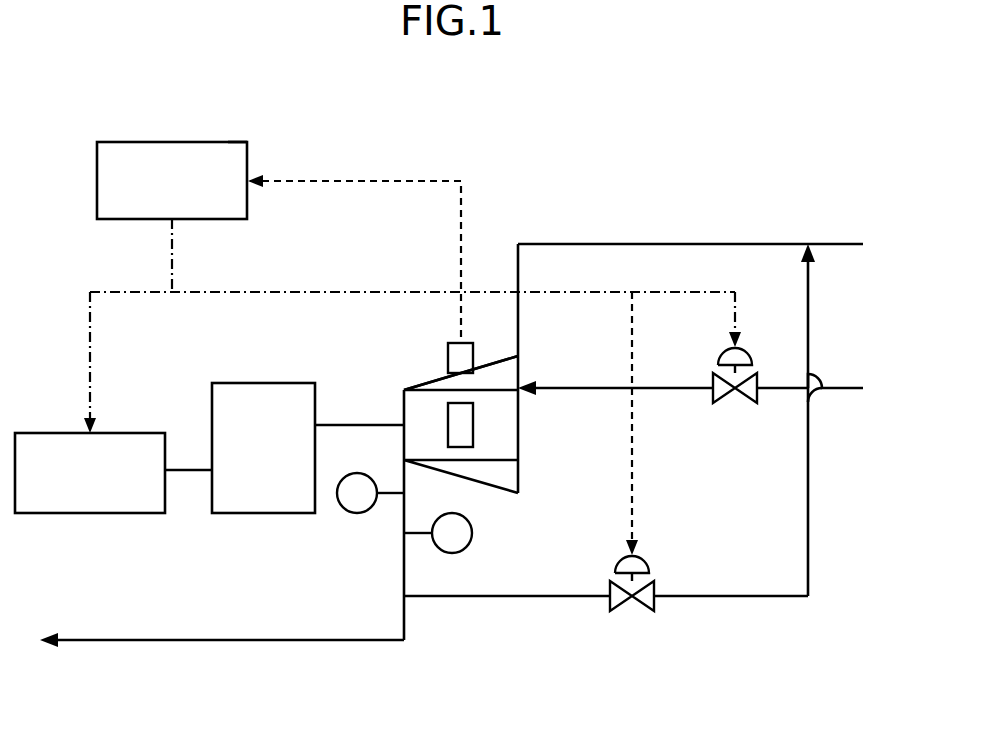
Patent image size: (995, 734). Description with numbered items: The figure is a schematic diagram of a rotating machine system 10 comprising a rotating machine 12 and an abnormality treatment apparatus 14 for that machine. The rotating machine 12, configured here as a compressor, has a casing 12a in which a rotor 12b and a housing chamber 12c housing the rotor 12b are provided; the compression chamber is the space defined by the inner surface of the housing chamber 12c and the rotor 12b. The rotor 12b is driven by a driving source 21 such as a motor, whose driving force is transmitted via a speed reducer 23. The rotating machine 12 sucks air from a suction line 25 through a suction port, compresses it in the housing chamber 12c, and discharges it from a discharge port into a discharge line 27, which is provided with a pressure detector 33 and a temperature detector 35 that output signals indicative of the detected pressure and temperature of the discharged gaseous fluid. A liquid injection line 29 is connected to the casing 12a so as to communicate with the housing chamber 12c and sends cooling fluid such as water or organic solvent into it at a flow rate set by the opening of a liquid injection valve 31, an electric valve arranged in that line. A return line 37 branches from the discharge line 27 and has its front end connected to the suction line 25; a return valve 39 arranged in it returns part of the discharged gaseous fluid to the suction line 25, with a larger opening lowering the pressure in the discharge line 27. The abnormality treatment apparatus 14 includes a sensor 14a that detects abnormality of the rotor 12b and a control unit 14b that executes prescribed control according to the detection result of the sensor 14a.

The rotating machine system 10 is at (516, 120).
The rotating machine 12 is at (536, 448).
The casing 12a is at (520, 407).
The rotor 12b is at (473, 425).
The housing chamber 12c is at (496, 396).
The abnormality treatment apparatus 14 is at (150, 124).
The sensor 14a is at (448, 350).
The control unit 14b is at (220, 142).
The driving source 21 is at (108, 513).
The speed reducer 23 is at (258, 513).
The suction line 25 is at (632, 244).
The discharge line 27 is at (325, 641).
The liquid injection line 29 is at (670, 390).
The liquid injection valve 31 is at (742, 400).
The pressure detector 33 is at (357, 513).
The temperature detector 35 is at (466, 547).
The return line 37 is at (810, 512).
The return valve 39 is at (637, 613).